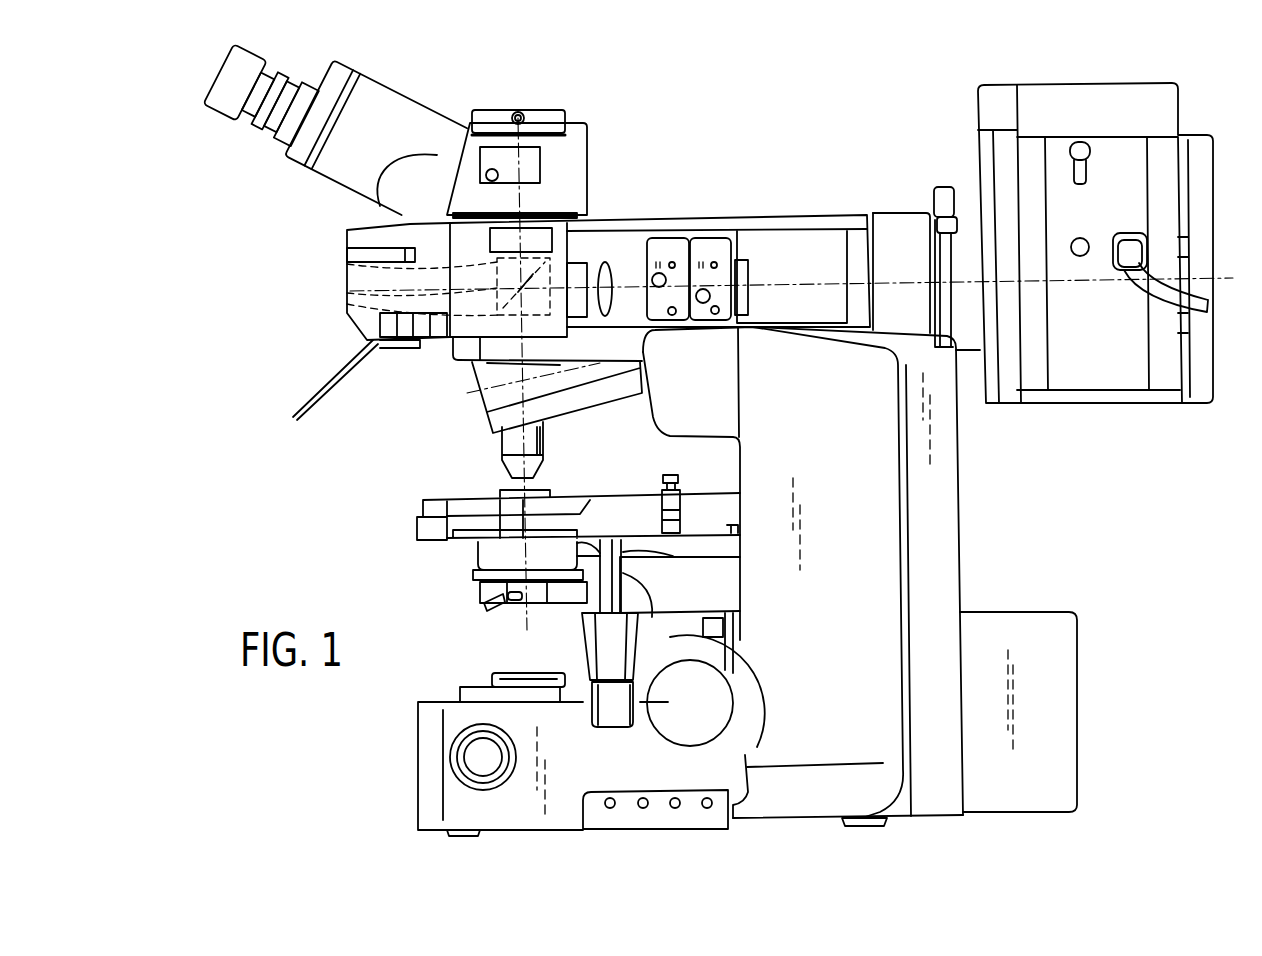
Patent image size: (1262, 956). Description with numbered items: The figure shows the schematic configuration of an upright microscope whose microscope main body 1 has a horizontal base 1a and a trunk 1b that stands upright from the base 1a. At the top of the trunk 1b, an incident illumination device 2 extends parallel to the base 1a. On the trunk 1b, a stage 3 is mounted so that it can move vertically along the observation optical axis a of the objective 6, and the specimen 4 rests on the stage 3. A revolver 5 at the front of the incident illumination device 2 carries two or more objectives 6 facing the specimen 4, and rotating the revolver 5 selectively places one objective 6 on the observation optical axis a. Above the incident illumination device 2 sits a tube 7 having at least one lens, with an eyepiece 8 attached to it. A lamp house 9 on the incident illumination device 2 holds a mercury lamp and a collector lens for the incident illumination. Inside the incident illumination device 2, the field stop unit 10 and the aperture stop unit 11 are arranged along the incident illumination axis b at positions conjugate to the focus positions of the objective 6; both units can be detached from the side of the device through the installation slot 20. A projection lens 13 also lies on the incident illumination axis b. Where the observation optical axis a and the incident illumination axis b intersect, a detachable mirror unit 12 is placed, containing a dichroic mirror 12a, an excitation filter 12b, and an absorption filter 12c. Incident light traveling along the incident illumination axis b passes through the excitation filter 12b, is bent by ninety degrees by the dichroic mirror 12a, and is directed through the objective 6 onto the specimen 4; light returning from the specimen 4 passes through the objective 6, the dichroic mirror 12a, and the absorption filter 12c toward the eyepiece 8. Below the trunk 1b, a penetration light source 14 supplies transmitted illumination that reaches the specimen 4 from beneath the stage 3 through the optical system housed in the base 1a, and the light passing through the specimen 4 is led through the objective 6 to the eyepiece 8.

The microscope main body 1 is at (696, 581).
The base 1a is at (498, 808).
The trunk 1b is at (868, 597).
The incident illumination device 2 is at (639, 214).
The stage 3 is at (423, 506).
The specimen 4 is at (547, 488).
The revolver 5 is at (487, 370).
The objective 6 is at (506, 446).
The tube 7 is at (578, 158).
The eyepiece 8 is at (250, 114).
The lamp house 9 is at (1130, 195).
The field stop unit 10 is at (675, 245).
The aperture stop unit 11 is at (717, 247).
The mirror unit 12 is at (405, 321).
The dichroic mirror 12a is at (350, 293).
The excitation filter 12b is at (399, 321).
The absorption filter 12c is at (347, 265).
The projection lens 13 is at (613, 262).
The penetration light source 14 is at (1053, 742).
The installation slot 20 is at (697, 228).
The observation optical axis a is at (480, 394).
The incident illumination axis b is at (796, 285).